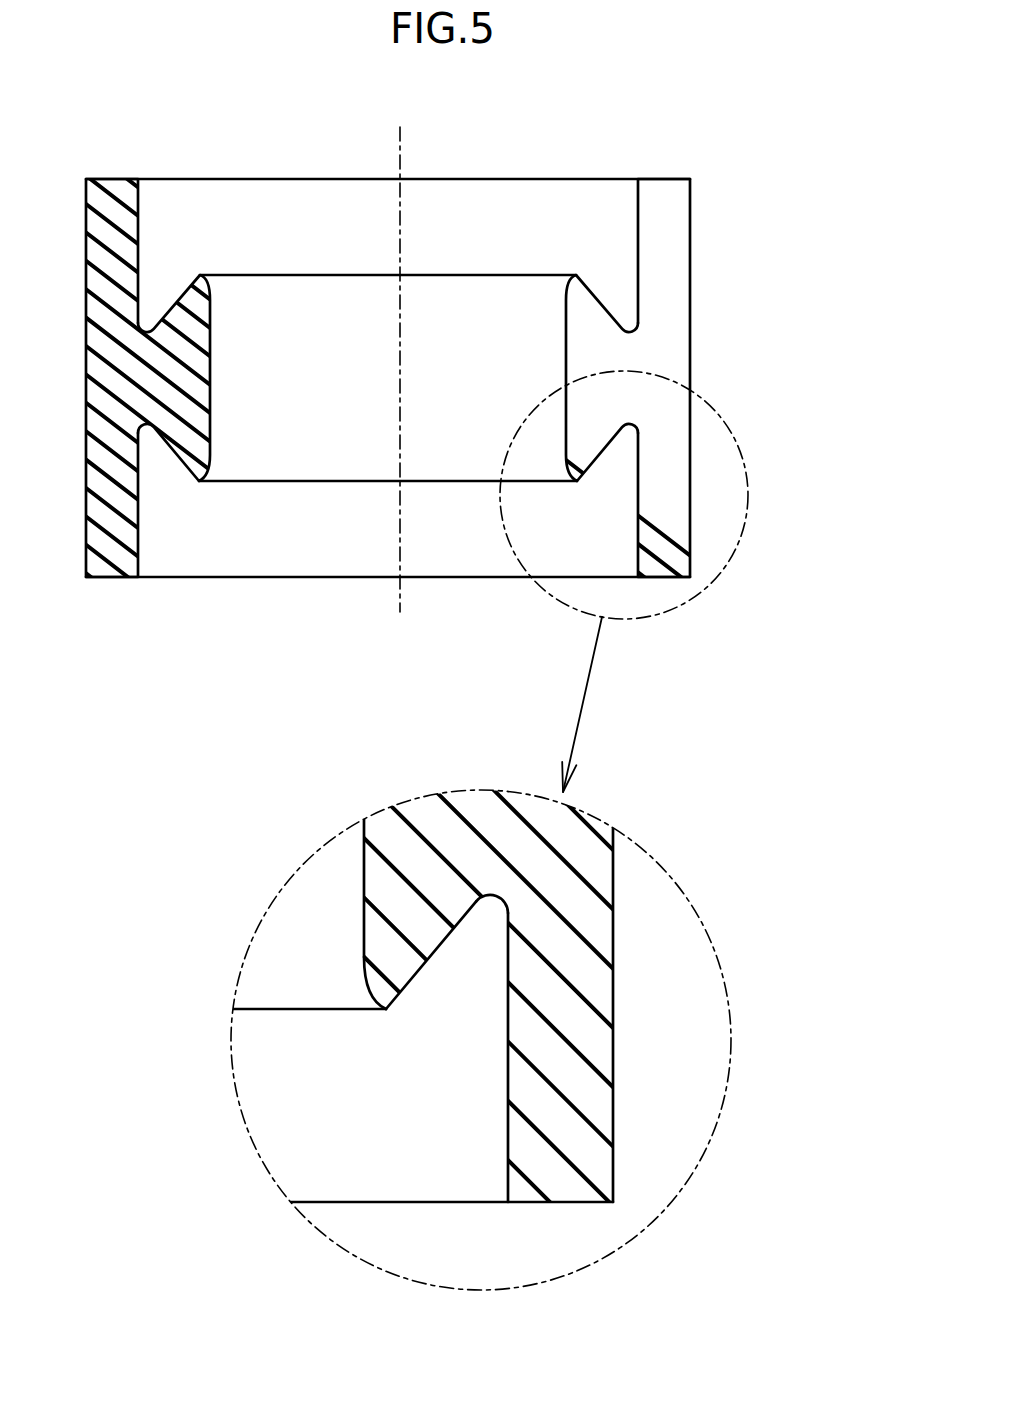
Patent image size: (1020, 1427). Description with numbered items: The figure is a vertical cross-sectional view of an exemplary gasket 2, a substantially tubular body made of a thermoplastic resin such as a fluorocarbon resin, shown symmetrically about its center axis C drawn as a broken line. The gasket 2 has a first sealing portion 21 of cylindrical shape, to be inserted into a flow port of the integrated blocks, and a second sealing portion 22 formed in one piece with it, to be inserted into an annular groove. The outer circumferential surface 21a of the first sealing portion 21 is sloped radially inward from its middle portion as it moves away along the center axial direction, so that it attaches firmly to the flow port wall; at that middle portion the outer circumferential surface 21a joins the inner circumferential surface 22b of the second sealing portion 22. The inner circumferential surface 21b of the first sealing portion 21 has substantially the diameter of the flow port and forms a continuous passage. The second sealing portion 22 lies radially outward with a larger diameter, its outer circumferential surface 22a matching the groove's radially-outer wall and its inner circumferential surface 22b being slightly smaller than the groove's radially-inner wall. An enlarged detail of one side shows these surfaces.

The gasket 2 is at (360, 557).
The first sealing portion 21 is at (565, 362).
The outer circumferential surface 21a is at (423, 966).
The inner circumferential surface 21b is at (367, 985).
The second sealing portion 22 is at (692, 332).
The outer circumferential surface 22a is at (614, 1052).
The inner circumferential surface 22b is at (510, 1128).
The center axis C is at (400, 155).